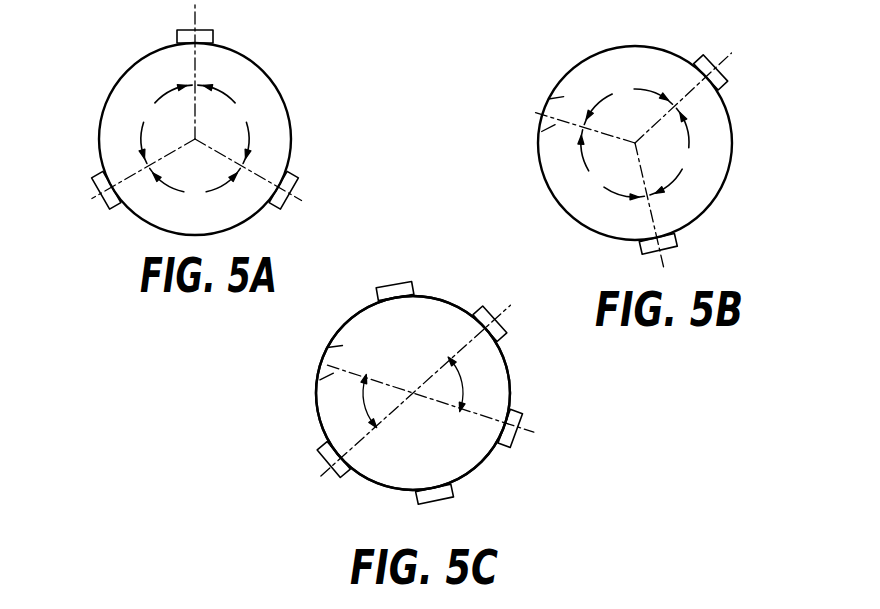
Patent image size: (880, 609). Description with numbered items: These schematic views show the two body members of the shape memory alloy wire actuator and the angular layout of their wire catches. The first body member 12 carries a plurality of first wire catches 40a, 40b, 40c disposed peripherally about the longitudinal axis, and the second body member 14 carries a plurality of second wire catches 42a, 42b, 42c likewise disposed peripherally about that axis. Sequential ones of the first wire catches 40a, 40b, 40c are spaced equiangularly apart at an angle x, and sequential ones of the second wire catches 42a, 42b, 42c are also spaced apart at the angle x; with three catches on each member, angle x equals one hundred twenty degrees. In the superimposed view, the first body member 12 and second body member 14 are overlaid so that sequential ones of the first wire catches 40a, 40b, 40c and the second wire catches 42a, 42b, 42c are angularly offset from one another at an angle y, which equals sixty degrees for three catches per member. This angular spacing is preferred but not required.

In FIG. 5A, the first body member 12 is at (280, 98).
In FIG. 5C, the first body member 12 is at (477, 467).
In FIG. 5B, the second body member 14 is at (733, 148).
In FIG. 5C, the second body member 14 is at (413, 393).
In FIG. 5A, the first wire catch 40a is at (97, 177).
In FIG. 5C, the first wire catch 40a is at (322, 453).
In FIG. 5A, the first wire catch 40b is at (214, 33).
In FIG. 5C, the first wire catch 40b is at (423, 270).
In FIG. 5A, the first wire catch 40c is at (293, 185).
In FIG. 5C, the first wire catch 40c is at (521, 416).
In FIG. 5B, the second wire catch 42a is at (727, 73).
In FIG. 5C, the second wire catch 42a is at (483, 311).
In FIG. 5B, the second wire catch 42b is at (546, 82).
In FIG. 5C, the second wire catch 42b is at (328, 337).
In FIG. 5B, the second wire catch 42c is at (673, 240).
In FIG. 5C, the second wire catch 42c is at (418, 499).